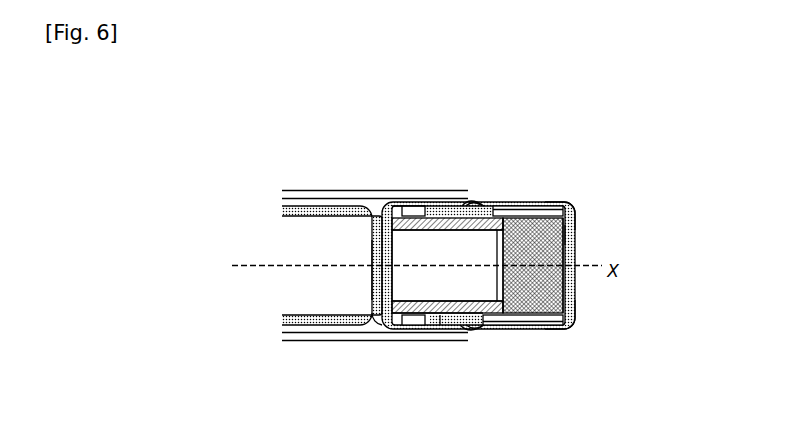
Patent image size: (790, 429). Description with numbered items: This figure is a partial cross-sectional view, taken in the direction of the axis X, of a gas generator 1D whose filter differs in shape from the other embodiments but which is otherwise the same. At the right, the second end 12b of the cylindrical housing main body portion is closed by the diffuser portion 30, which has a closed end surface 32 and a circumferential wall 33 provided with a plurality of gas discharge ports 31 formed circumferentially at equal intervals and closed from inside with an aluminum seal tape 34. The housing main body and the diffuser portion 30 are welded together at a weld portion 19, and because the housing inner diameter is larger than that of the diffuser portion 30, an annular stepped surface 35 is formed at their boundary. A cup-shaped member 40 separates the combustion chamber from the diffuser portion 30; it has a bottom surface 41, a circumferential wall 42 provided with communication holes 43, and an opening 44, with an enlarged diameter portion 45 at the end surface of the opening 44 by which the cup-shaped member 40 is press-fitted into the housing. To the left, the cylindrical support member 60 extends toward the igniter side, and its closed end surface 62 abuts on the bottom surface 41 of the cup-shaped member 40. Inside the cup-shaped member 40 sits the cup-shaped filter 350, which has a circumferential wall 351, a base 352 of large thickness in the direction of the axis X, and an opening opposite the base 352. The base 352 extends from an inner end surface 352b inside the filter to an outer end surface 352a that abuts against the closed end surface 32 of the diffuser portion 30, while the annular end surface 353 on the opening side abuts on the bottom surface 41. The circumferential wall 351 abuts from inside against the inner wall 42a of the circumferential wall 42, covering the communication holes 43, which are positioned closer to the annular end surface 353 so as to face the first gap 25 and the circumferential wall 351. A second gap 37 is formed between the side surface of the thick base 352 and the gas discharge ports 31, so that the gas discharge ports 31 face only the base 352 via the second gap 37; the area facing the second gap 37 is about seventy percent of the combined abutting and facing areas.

The gas generator 1D is at (381, 142).
The cylindrical support member 60 is at (300, 203).
The cup-shaped member 40 is at (385, 205).
The diffuser portion 30 is at (578, 199).
The communication holes 43 is at (419, 205).
The first gap 25 is at (403, 205).
The enlarged diameter portion 45 is at (459, 204).
The cup-shaped filter 350 is at (472, 212).
The weld portion 19 is at (481, 209).
The gas discharge ports 31 is at (530, 206).
The second gap 37 is at (561, 203).
The circumferential wall 33 is at (553, 331).
The closed end surface 32 is at (566, 233).
The base 352 is at (566, 287).
The outer end surface 352a is at (566, 256).
The inner end surface 352b is at (499, 233).
The aluminum seal tape 34 is at (503, 262).
The bottom surface 41 is at (393, 244).
The inner wall 42a is at (438, 301).
The opening 44 is at (465, 301).
The circumferential wall 42 is at (438, 325).
The annular stepped surface 35 is at (462, 325).
The circumferential wall 351 is at (449, 316).
The second end 12b is at (486, 328).
The annular end surface 353 is at (380, 315).
The closed end surface 62 is at (373, 282).